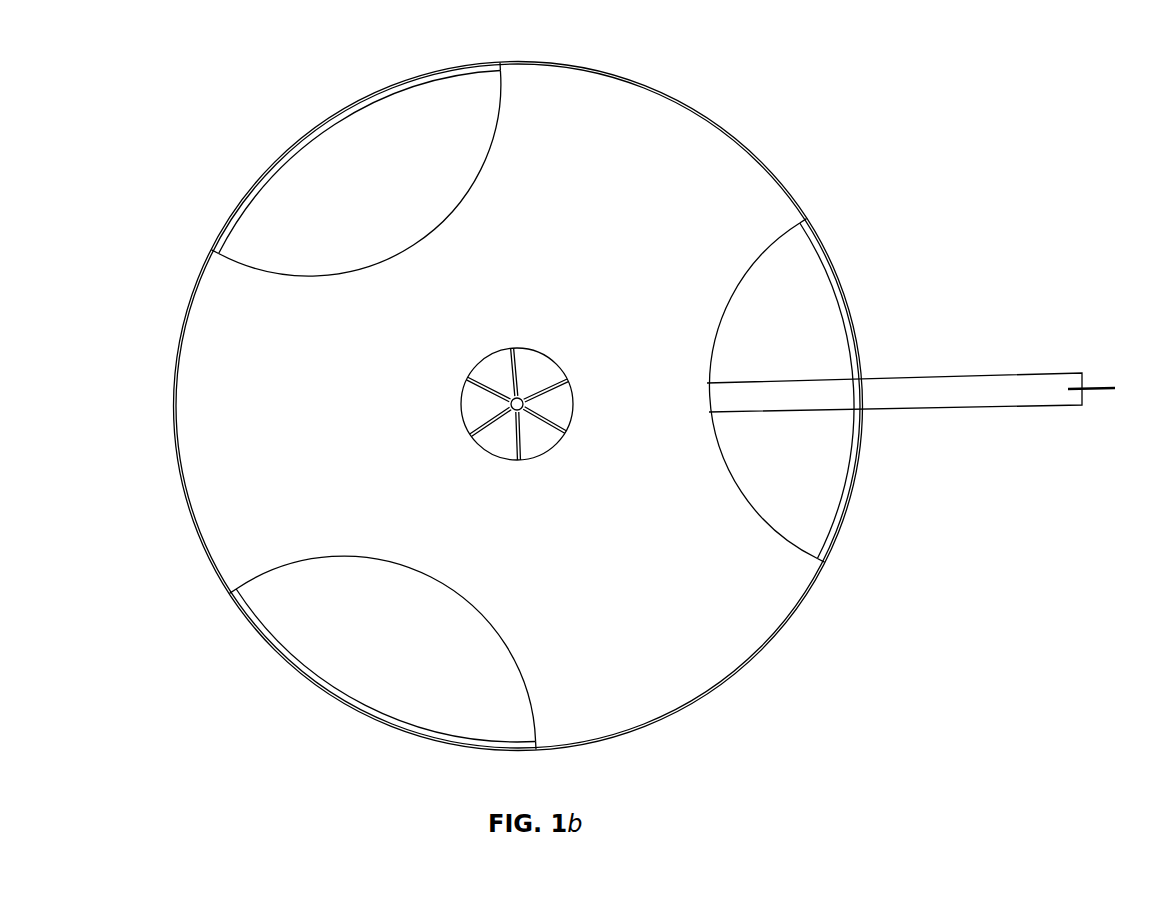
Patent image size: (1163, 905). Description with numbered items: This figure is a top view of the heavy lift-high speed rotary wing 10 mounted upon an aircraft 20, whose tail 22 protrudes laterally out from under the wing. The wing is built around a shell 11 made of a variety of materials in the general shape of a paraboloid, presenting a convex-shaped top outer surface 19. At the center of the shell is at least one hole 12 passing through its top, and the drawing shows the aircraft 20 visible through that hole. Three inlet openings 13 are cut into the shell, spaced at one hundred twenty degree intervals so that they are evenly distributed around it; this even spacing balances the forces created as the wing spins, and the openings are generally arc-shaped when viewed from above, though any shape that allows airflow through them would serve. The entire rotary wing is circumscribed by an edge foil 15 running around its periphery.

The heavy lift-high speed rotary wing 10 is at (213, 78).
The shell 11 is at (648, 252).
The hole 12 is at (536, 365).
The inlet openings 13 is at (349, 146).
The edge foil 15 is at (248, 182).
The top outer surface 19 is at (648, 152).
The aircraft 20 is at (472, 411).
The tail 22 is at (1000, 401).